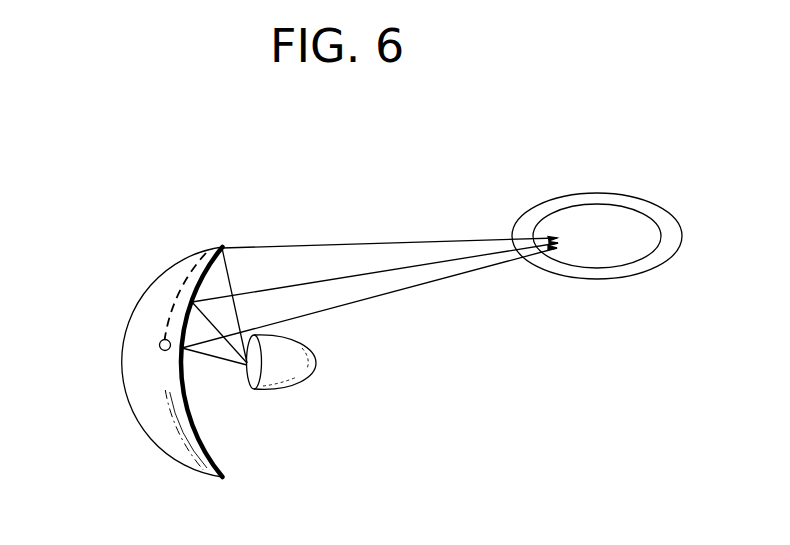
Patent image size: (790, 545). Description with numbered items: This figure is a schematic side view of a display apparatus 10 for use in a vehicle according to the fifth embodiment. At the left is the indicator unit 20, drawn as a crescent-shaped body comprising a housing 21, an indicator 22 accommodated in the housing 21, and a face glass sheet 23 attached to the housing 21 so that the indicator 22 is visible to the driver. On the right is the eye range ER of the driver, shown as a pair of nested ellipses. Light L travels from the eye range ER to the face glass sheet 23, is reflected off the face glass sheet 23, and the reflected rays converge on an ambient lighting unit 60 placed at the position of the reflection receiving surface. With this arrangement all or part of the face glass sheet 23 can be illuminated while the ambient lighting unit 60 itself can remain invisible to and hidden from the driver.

The display apparatus 10 is at (333, 169).
The indicator unit 20 is at (193, 252).
The housing 21 is at (150, 292).
The indicator 22 is at (180, 293).
The face glass sheet 23 is at (197, 463).
The ambient lighting unit 60 is at (305, 360).
The light L is at (410, 243).
The eye range ER is at (607, 222).